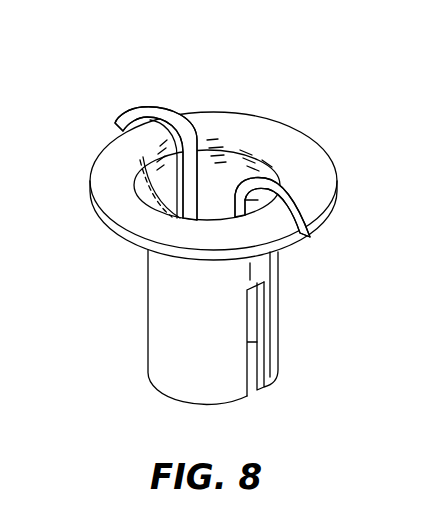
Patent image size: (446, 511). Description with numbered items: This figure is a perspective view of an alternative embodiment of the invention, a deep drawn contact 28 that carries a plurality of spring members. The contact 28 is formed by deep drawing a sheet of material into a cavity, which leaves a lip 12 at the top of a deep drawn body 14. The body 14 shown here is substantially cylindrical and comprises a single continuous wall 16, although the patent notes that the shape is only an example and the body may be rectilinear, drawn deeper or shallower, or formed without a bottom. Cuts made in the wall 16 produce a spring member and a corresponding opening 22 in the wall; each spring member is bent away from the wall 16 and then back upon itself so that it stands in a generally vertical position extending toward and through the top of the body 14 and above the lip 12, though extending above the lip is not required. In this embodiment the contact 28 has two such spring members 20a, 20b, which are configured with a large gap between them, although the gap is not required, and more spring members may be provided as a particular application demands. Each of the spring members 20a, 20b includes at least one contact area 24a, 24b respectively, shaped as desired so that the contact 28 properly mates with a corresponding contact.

The lip 12 is at (335, 206).
The deep drawn body 14 is at (280, 308).
The wall 16 is at (177, 348).
The first spring member 20a is at (185, 183).
The second spring member 20b is at (243, 202).
The opening 22 is at (258, 402).
The first contact area 24a is at (152, 107).
The second contact area 24b is at (290, 180).
The contact 28 is at (221, 219).